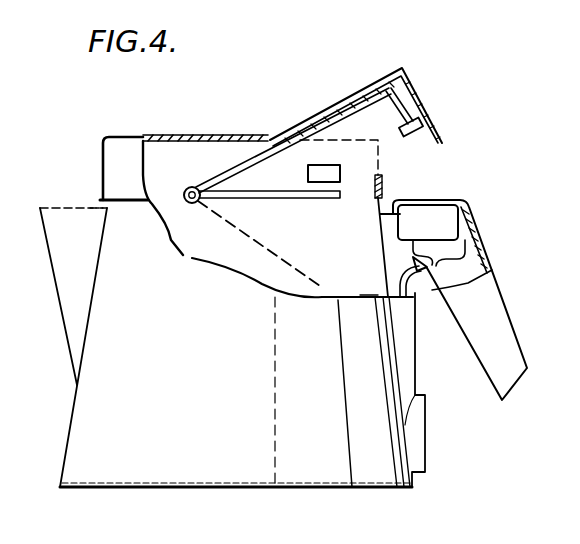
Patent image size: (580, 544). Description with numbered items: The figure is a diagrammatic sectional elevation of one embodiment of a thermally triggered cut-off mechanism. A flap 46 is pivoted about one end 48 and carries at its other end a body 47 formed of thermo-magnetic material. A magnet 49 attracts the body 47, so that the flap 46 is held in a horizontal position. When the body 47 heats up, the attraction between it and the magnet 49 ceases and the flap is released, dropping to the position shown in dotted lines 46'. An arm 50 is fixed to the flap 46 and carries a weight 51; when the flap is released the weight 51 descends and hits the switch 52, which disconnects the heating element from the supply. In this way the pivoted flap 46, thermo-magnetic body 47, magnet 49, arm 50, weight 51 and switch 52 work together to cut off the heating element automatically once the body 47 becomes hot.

The flap 46 is at (269, 213).
The released flap position 46' is at (260, 244).
The body 47 is at (307, 190).
The pivot end 48 is at (189, 192).
The magnet 49 is at (309, 171).
The arm 50 is at (332, 108).
The weight 51 is at (402, 126).
The switch 52 is at (432, 213).